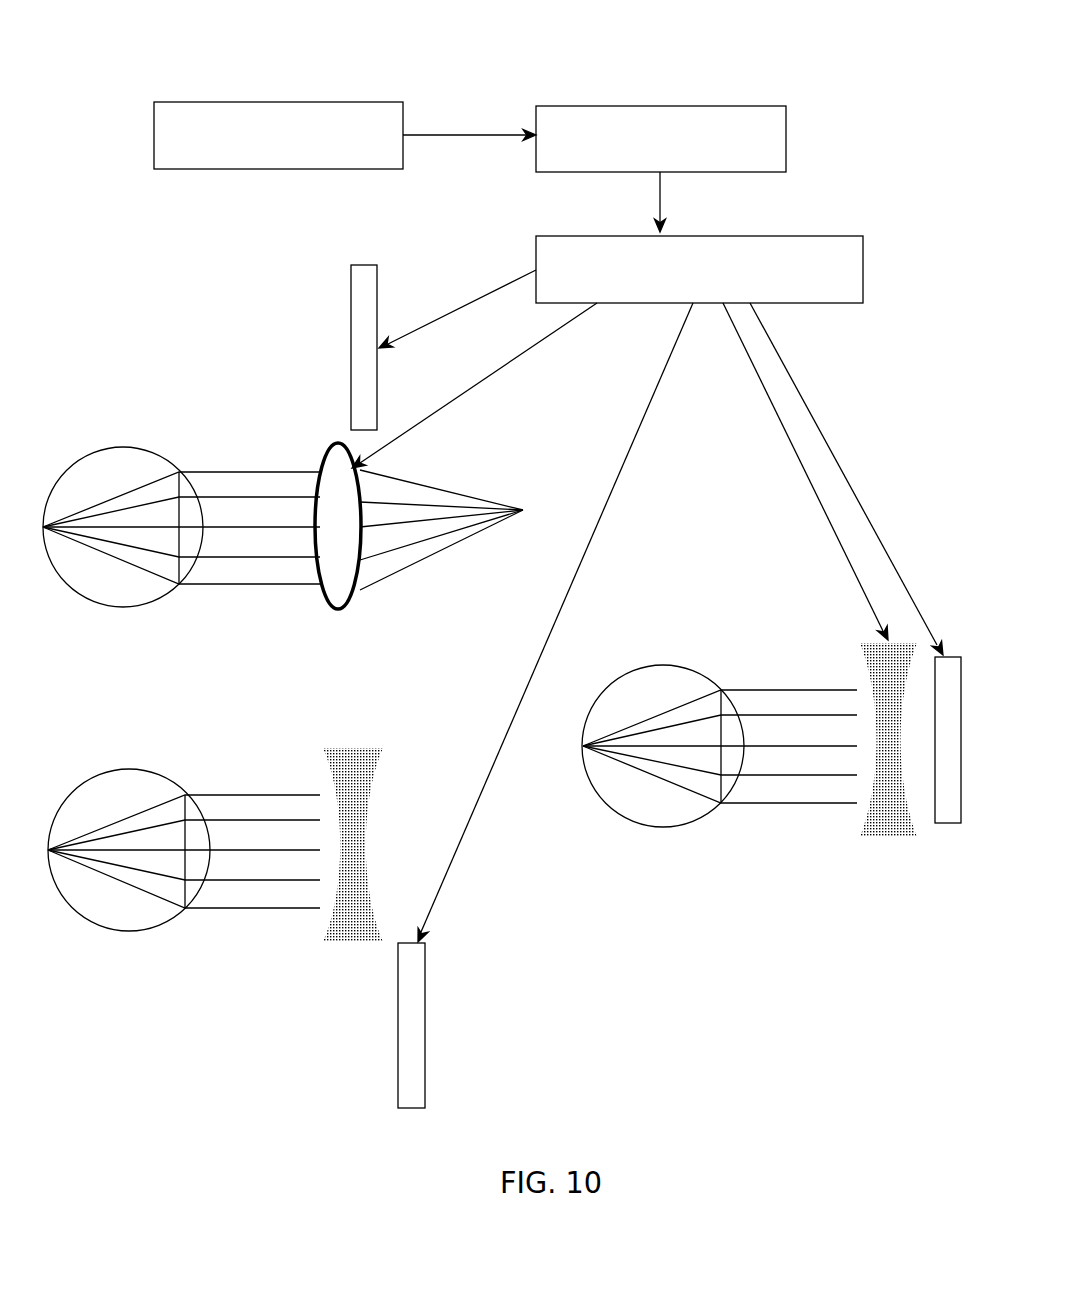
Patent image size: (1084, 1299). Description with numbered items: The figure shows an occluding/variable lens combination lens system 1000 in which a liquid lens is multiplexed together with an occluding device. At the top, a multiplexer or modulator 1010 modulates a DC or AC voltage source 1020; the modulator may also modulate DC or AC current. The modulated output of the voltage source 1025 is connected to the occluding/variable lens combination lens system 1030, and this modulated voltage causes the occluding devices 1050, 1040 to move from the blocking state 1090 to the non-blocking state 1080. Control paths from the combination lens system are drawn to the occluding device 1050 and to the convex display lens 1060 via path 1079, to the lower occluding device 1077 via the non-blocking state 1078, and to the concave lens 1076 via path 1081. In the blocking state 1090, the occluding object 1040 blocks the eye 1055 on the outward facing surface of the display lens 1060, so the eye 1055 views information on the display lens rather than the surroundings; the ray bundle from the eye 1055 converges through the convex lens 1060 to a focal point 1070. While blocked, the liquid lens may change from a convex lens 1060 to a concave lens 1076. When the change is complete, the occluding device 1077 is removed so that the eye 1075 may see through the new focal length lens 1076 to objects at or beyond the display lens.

The occluding/variable lens combination lens system 1000 is at (447, 65).
The multiplexer or modulator 1010 is at (228, 102).
The DC or AC voltage source 1020 is at (612, 106).
The modulated output of the voltage source 1025 is at (664, 223).
The occluding/variable lens combination lens system 1030 is at (765, 236).
The occluding object 1040 is at (945, 825).
The occluding device 1050 is at (358, 265).
The eye 1055 is at (112, 447).
The display lens (convex lens) 1060 is at (362, 494).
The focal point 1070 is at (523, 512).
The eye 1075 is at (115, 769).
The concave lens (new focal length lens) 1076 is at (320, 782).
The occluding device 1077 is at (425, 943).
The non-blocking state 1078 is at (567, 590).
The control path to convex lens 1079 is at (476, 393).
The non-blocking state 1080 is at (468, 306).
The control path to right concave lens 1081 is at (777, 410).
The blocking state 1090 is at (808, 399).